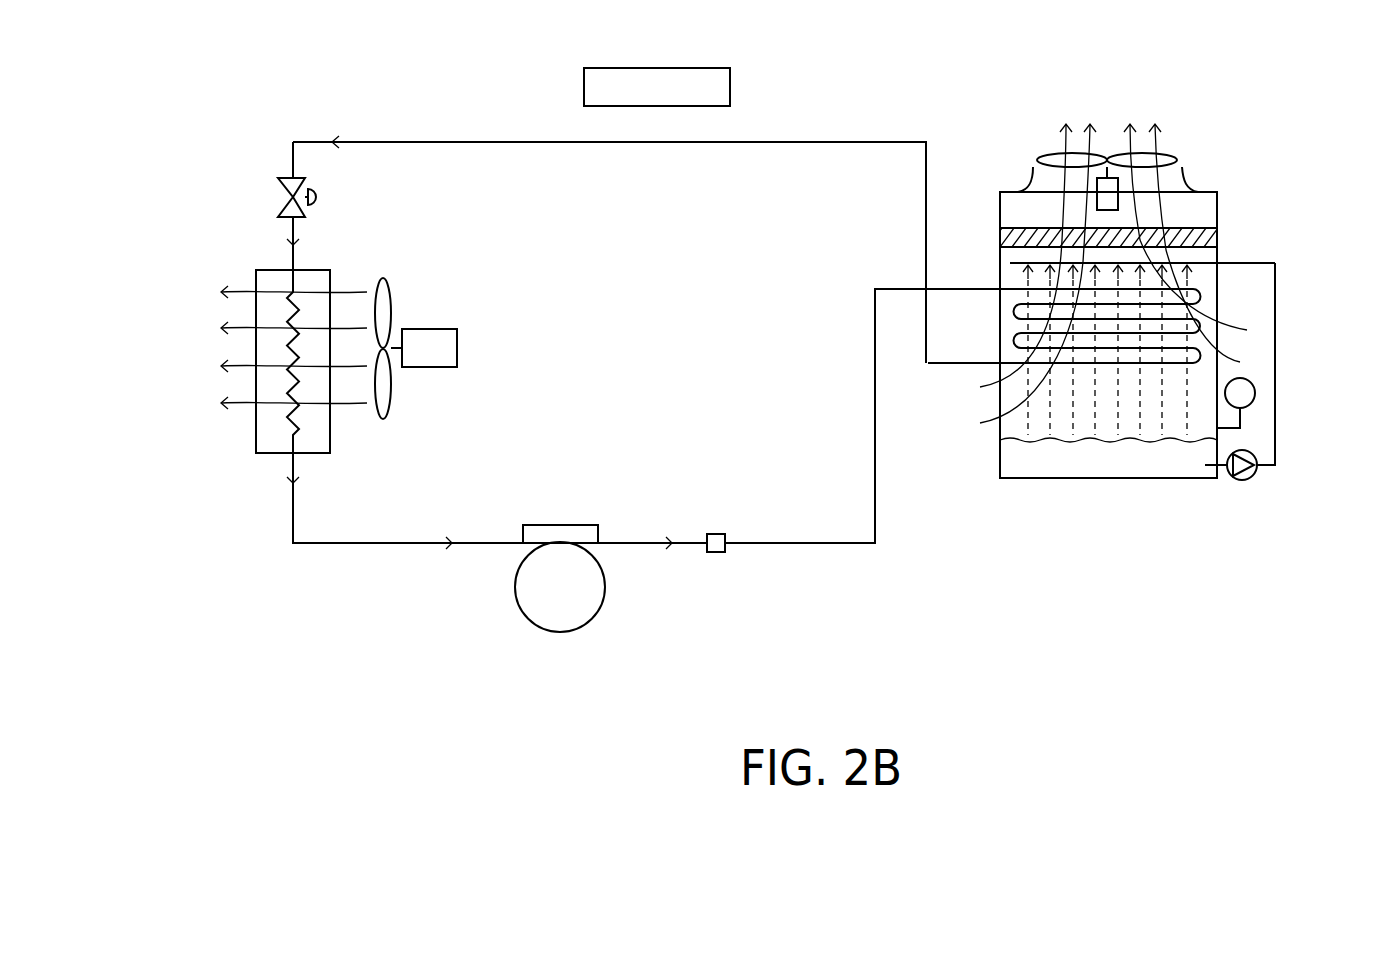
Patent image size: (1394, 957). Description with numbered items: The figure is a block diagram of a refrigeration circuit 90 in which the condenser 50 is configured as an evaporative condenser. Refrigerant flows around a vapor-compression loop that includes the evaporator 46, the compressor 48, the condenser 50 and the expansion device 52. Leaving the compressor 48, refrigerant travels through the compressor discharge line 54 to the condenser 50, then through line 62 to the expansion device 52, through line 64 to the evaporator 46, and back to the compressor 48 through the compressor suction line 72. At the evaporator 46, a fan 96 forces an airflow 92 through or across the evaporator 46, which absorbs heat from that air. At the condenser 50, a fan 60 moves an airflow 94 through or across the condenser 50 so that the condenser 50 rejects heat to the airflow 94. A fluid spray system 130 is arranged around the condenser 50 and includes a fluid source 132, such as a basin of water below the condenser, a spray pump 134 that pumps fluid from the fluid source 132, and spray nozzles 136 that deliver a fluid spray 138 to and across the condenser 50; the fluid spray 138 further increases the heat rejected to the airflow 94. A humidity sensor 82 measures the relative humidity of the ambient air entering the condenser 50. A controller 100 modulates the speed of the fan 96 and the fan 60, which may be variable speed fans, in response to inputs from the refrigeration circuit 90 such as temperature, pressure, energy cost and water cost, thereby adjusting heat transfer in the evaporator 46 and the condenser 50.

The evaporator 46 is at (318, 277).
The compressor 48 is at (584, 533).
The condenser 50 is at (1032, 118).
The expansion device 52 is at (317, 197).
The compressor discharge line 54 is at (637, 548).
The fan 60 is at (1166, 158).
The line 62 is at (392, 146).
The line 64 is at (298, 243).
The compressor suction line 72 is at (310, 548).
The humidity sensor 82 is at (1256, 390).
The refrigeration circuit 90 is at (466, 126).
The airflow 92 is at (236, 290).
The airflow 94 is at (1096, 114).
The fan 96 is at (450, 335).
The controller 100 is at (722, 79).
The fluid spray system 130 is at (1299, 333).
The fluid source 132 is at (1093, 466).
The spray pump 134 is at (1246, 480).
The spray nozzles 136 is at (1197, 273).
The fluid spray 138 is at (1212, 306).